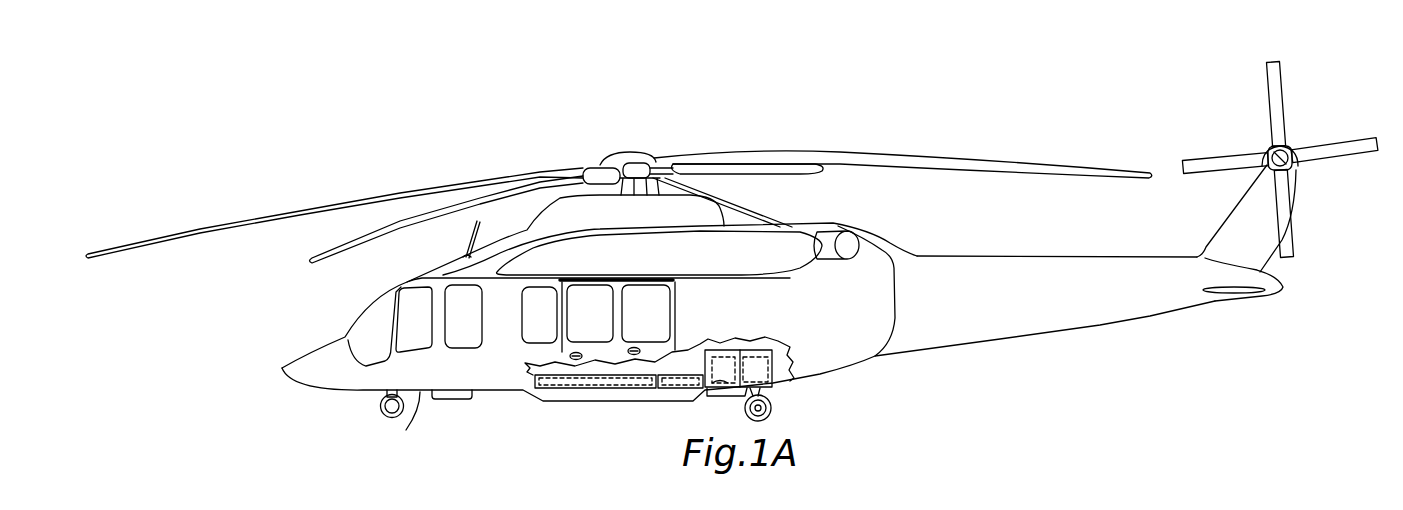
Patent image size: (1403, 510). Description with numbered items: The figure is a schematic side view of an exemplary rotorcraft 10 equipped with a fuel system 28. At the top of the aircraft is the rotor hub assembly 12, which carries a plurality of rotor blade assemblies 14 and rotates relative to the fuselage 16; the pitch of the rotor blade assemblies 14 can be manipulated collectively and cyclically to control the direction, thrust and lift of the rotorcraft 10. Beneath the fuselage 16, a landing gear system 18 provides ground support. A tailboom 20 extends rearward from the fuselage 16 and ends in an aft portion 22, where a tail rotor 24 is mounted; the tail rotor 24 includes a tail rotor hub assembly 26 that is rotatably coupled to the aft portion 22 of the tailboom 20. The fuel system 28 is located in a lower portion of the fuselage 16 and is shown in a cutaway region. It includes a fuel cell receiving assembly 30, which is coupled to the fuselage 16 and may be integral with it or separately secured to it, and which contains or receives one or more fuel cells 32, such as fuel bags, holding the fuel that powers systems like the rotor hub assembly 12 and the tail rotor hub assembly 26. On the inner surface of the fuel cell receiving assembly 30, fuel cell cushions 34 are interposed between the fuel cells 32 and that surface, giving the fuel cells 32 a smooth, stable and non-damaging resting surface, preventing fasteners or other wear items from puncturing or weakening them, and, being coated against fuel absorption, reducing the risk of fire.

The rotorcraft 10 is at (490, 156).
The rotor hub assembly 12 is at (619, 176).
The rotor blade assembly 14 is at (892, 155).
The fuselage 16 is at (420, 391).
The landing gear system 18 is at (772, 412).
The tailboom 20 is at (938, 340).
The aft portion 22 is at (1220, 303).
The tail rotor 24 is at (1279, 160).
The tail rotor hub assembly 26 is at (1267, 173).
The fuel system 28 is at (621, 388).
The fuel cell receiving assembly 30 is at (680, 375).
The fuel cell 32 is at (734, 361).
The fuel cell cushion 34 is at (727, 385).